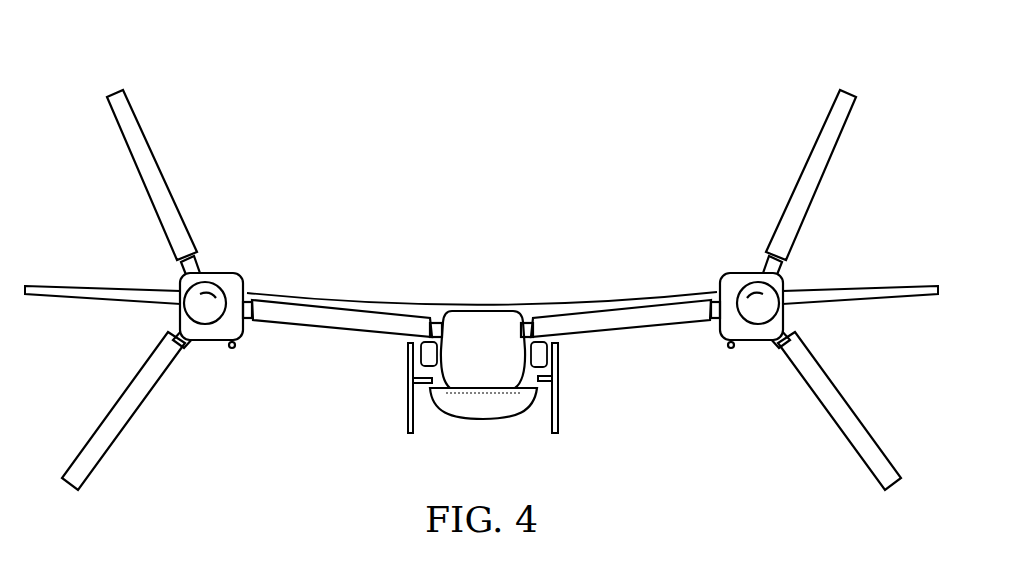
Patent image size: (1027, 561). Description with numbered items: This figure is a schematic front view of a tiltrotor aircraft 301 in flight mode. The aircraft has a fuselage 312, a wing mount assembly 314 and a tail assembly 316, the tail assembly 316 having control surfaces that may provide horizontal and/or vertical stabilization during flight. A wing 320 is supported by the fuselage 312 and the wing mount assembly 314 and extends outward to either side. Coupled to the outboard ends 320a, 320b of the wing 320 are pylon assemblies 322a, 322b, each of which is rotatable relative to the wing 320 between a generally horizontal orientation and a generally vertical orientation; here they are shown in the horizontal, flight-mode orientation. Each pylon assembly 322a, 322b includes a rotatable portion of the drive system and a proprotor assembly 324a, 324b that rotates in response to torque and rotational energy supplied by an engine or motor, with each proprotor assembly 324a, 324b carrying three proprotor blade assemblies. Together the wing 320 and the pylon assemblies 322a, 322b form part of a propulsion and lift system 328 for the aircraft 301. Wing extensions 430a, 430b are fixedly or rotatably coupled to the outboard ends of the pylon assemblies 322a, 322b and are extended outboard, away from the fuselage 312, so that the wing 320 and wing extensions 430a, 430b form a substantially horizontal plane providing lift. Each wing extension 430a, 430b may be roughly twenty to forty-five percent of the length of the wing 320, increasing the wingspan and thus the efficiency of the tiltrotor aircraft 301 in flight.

The tiltrotor aircraft 301 is at (316, 70).
The fuselage 312 is at (481, 420).
The wing mount assembly 314 is at (482, 311).
The tail assembly 316 is at (558, 415).
The wing 320 is at (413, 299).
The outboard end of wing 320a is at (709, 296).
The outboard end of wing 320b is at (256, 298).
The pylon assembly 322a is at (731, 345).
The pylon assembly 322b is at (232, 345).
The proprotor assembly 324a is at (755, 293).
The proprotor assembly 324b is at (208, 293).
The propulsion and lift system 328 is at (541, 297).
The wing extension 430a is at (893, 286).
The wing extension 430b is at (70, 286).